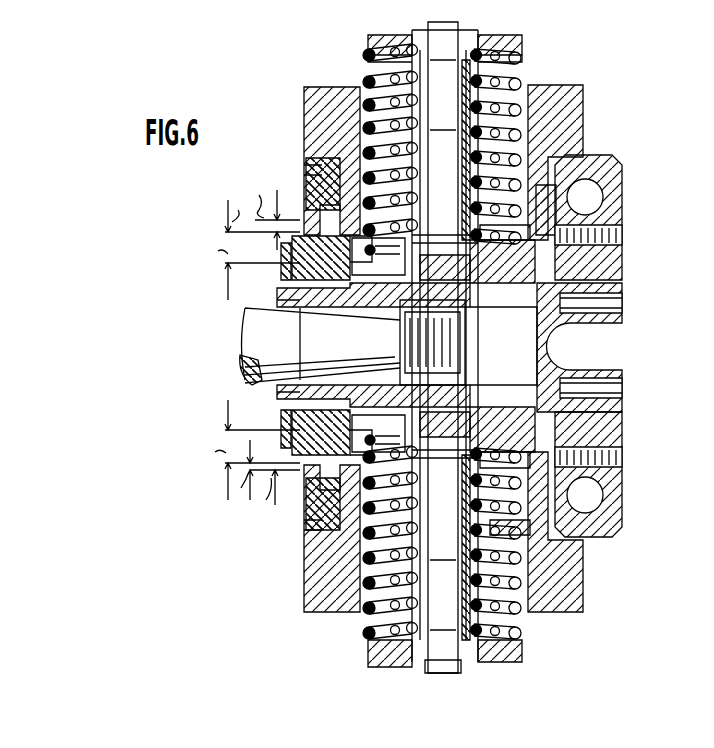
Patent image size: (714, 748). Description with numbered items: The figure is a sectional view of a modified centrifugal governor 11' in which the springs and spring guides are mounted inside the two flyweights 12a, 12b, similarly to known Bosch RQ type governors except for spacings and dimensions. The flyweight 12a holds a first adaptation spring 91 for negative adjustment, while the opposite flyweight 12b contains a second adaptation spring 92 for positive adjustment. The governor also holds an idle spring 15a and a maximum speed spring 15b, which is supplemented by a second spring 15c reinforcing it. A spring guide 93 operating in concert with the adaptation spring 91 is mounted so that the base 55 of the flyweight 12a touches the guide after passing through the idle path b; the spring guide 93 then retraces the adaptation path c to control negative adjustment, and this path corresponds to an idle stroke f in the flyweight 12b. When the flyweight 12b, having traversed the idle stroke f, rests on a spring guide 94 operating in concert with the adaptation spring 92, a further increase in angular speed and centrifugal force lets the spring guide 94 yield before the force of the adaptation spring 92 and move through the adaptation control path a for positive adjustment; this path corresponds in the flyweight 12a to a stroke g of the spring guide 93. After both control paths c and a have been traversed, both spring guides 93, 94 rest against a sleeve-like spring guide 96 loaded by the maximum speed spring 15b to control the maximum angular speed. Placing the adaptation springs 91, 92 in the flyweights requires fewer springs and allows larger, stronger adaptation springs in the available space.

The centrifugal governor 11' is at (618, 344).
The flyweight 12a is at (310, 112).
The flyweight 12b is at (315, 582).
The idle spring 15a is at (517, 62).
The maximum speed spring 15b is at (490, 110).
The second spring 15c is at (527, 153).
The base of flyweight 55 is at (320, 346).
The first adaptation spring 91 is at (367, 175).
The second adaptation spring 92 is at (370, 528).
The spring guide 93 is at (510, 213).
The spring guide 94 is at (530, 470).
The sleeve-like spring guide 96 is at (543, 187).
The adaptation control path a is at (275, 496).
The idle path b is at (251, 346).
The adaptation path c is at (262, 244).
The idle stroke f is at (262, 474).
The stroke of spring guide g is at (277, 210).